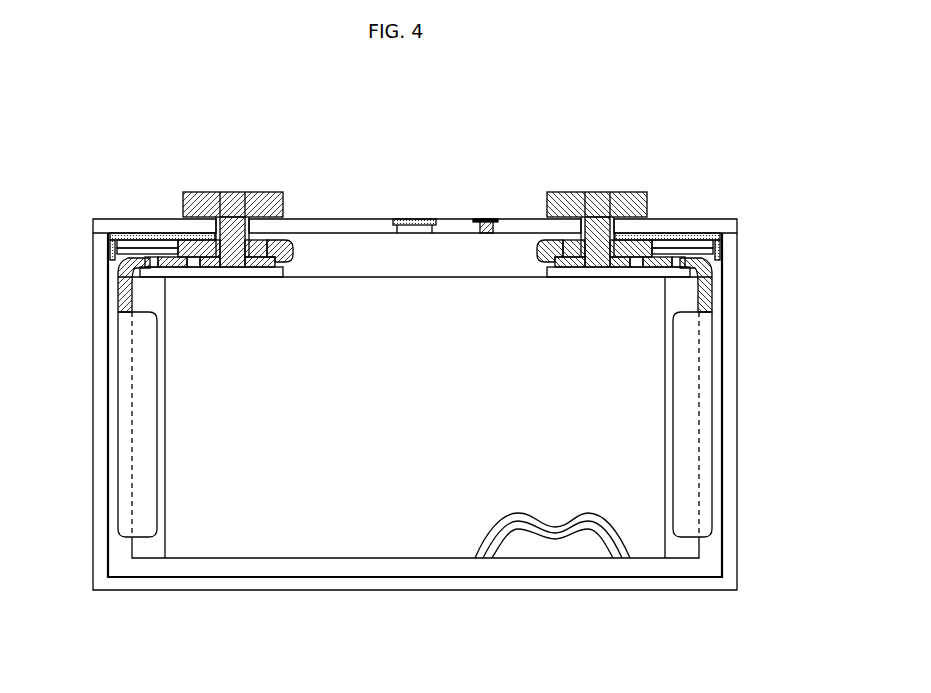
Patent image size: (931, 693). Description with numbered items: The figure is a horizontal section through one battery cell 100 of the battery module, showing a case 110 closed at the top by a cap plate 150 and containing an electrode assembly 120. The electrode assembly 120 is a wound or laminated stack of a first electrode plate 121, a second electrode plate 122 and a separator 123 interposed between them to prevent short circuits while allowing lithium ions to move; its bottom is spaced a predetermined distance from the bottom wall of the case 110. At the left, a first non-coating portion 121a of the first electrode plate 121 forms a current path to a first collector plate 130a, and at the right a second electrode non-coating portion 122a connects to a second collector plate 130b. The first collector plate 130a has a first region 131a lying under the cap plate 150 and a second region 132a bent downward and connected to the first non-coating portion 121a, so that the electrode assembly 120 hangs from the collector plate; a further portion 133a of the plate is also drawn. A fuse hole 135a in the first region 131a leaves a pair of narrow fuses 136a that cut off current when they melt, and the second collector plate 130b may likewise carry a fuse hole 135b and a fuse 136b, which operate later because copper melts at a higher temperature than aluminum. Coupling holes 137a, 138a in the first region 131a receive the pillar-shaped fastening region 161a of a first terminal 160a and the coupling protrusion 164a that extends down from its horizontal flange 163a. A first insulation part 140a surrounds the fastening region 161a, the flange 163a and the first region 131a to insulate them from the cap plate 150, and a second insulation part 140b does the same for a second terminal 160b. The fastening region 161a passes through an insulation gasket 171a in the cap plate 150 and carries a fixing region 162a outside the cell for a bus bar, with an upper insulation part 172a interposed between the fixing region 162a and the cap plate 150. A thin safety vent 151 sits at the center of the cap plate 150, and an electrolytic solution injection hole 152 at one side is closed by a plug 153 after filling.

The battery cell 100 is at (759, 176).
The case 110 is at (737, 536).
The electrode assembly 120 is at (262, 560).
The first electrode plate 121 is at (515, 535).
The second electrode plate 122 is at (583, 535).
The separator 123 is at (553, 530).
The first non-coating portion 121a is at (152, 550).
The second electrode non-coating portion 122a is at (680, 550).
The first collector plate 130a is at (115, 338).
The second collector plate 130b is at (716, 318).
The first region 131a is at (172, 268).
The second region 132a is at (118, 285).
The first fuse portion 133a is at (140, 428).
The fuse hole 135a is at (160, 240).
The fuse hole 135b is at (672, 240).
The fuse 136a is at (153, 275).
The fuse 136b is at (684, 274).
The coupling hole 137a is at (238, 268).
The coupling hole 138a is at (200, 268).
The first insulation part 140a is at (104, 230).
The second insulation part 140b is at (726, 232).
The cap plate 150 is at (368, 219).
The safety vent 151 is at (413, 219).
The electrolytic solution injection hole 152 is at (480, 219).
The plug 153 is at (493, 219).
The first terminal 160a is at (284, 189).
The second terminal 160b is at (634, 178).
The fastening region 161a is at (228, 192).
The fixing region 162a is at (258, 192).
The flange 163a is at (217, 268).
The coupling protrusion 164a is at (192, 268).
The insulation gasket 171a is at (290, 242).
The upper insulation part 172a is at (320, 232).